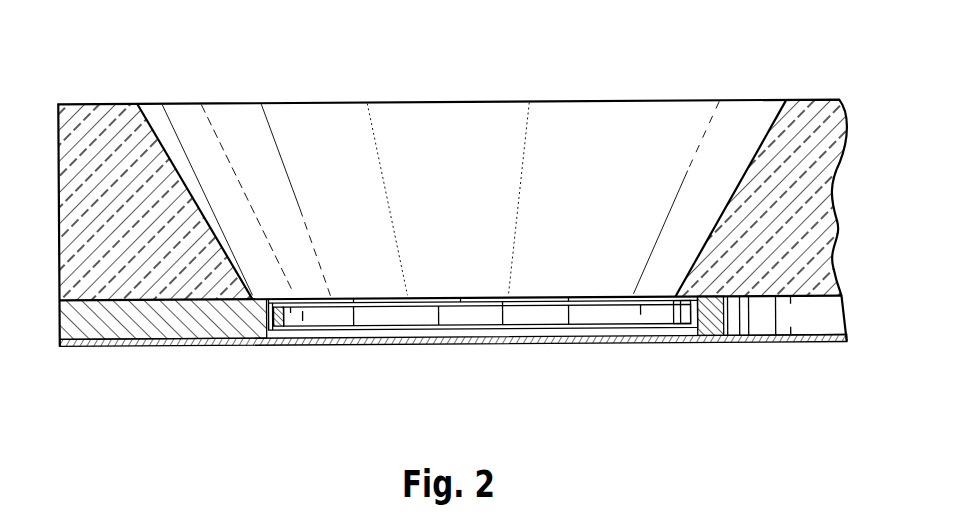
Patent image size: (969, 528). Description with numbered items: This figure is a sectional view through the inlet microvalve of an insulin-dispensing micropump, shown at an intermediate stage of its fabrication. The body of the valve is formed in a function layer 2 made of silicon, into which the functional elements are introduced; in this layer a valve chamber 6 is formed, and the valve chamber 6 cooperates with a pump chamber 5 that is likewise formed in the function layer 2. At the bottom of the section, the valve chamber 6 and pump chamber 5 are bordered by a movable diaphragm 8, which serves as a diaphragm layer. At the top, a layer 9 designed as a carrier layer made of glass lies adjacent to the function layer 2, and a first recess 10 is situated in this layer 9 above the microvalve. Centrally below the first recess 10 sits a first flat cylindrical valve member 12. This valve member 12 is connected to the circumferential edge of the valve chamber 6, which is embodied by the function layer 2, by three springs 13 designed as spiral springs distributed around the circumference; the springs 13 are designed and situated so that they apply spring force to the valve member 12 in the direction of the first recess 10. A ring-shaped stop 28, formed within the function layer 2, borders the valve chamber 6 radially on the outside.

The function layer 2 is at (181, 322).
The pump chamber 5 is at (823, 314).
The valve chamber 6 is at (547, 326).
The diaphragm 8 is at (379, 329).
The layer 9 is at (802, 138).
The first recess 10 is at (443, 143).
The first valve member 12 is at (443, 322).
The springs 13 is at (315, 320).
The stop 28 is at (258, 298).